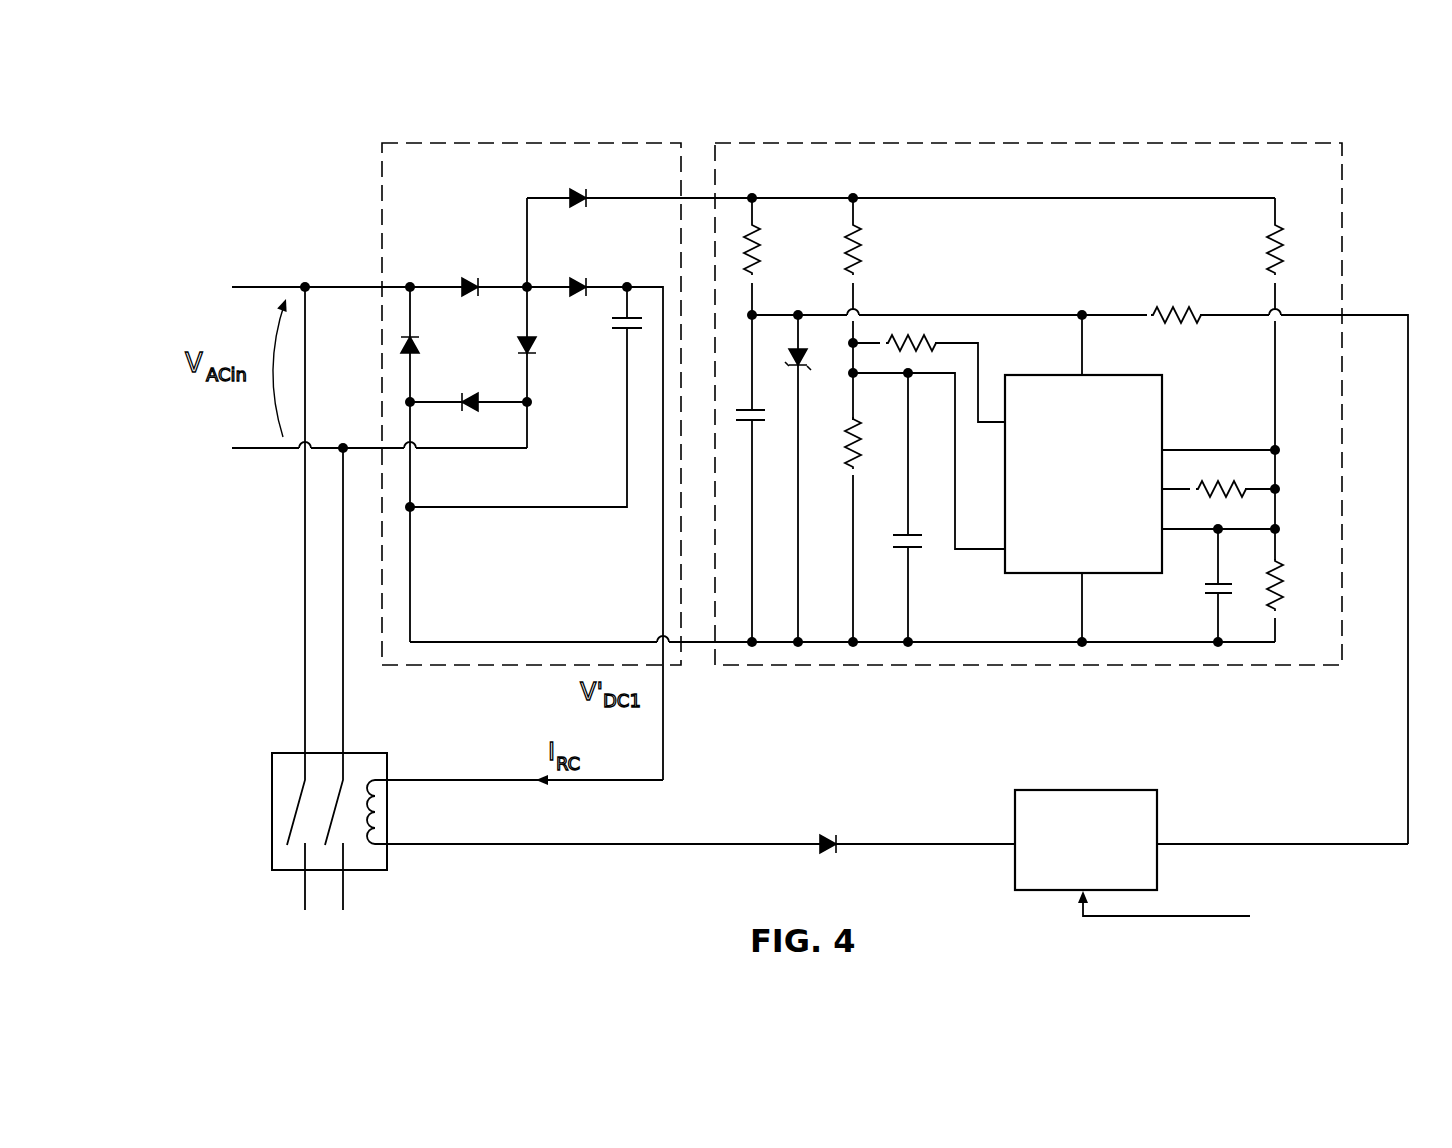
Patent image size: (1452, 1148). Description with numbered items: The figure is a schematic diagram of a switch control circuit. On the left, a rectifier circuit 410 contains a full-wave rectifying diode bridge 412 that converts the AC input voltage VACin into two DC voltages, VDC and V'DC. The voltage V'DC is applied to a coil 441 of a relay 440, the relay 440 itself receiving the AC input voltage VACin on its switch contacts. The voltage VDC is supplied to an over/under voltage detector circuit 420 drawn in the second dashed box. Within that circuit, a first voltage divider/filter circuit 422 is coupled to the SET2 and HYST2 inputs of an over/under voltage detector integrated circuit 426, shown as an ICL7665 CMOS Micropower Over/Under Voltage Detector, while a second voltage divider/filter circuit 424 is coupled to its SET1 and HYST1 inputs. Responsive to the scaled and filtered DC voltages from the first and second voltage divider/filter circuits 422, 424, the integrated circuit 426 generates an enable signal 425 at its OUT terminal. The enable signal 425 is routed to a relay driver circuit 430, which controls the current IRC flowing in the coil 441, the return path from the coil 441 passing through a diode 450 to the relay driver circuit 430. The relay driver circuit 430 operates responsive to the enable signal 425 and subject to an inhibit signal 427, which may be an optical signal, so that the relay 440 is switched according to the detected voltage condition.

The rectifier circuit 410 is at (828, 439).
The full-wave rectifying diode bridge 412 is at (453, 266).
The over/under voltage detector circuit 420 is at (1061, 471).
The first voltage divider/filter circuit 422 is at (933, 303).
The second voltage divider/filter circuit 424 is at (1148, 292).
The enable signal 425 is at (1200, 844).
The over/under voltage detector integrated circuit 426 is at (1105, 574).
The inhibit signal 427 is at (1218, 890).
The relay driver circuit 430 is at (1045, 790).
The relay 440 is at (368, 831).
The coil 441 is at (362, 848).
The diode 450 is at (830, 834).